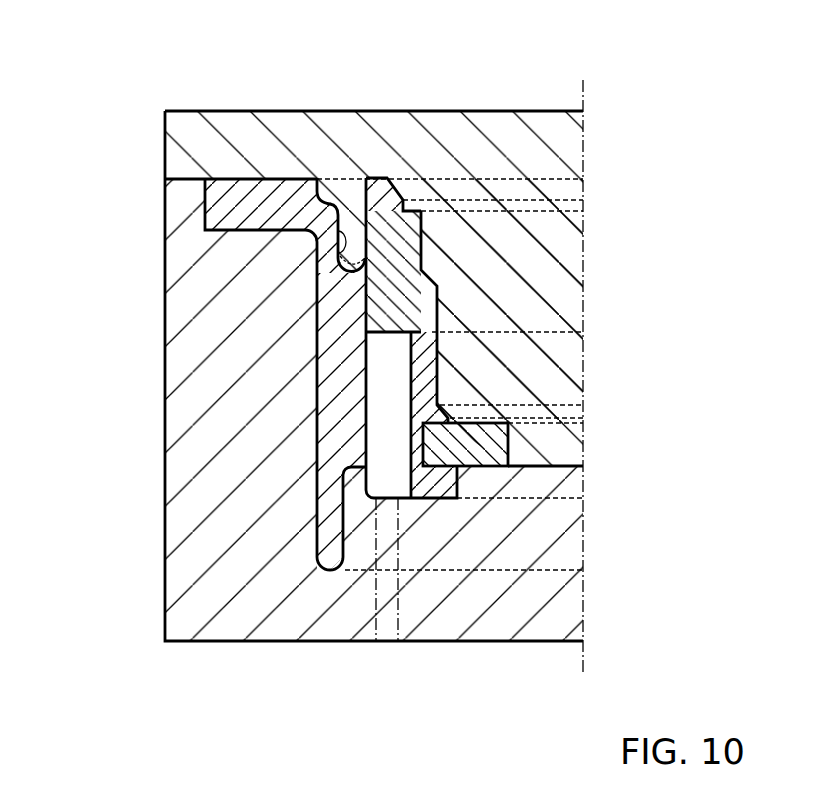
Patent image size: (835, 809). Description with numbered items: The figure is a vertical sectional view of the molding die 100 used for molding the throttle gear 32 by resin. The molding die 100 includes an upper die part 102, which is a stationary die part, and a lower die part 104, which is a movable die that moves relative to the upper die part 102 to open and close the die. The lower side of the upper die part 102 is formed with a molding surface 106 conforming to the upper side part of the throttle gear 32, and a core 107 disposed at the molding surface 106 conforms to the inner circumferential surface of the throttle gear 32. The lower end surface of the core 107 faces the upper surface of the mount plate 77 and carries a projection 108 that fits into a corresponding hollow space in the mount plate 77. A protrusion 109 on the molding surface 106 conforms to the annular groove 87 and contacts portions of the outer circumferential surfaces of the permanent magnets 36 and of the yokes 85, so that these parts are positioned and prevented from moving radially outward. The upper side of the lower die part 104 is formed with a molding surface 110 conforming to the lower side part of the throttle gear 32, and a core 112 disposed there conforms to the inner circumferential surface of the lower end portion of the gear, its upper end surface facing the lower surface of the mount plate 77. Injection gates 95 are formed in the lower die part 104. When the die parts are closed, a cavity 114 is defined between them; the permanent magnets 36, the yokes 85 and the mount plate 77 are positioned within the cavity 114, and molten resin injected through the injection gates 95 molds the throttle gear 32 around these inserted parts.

The molding die 100 is at (425, 78).
The upper die part 102 is at (529, 108).
The lower die part 104 is at (230, 643).
The molding surface 106 is at (278, 190).
The core 107 is at (537, 366).
The projection 108 is at (560, 440).
The protrusion 109 is at (352, 197).
The molding surface 110 is at (317, 558).
The core 112 is at (540, 485).
The cavity 114 is at (234, 374).
The throttle gear 32 is at (338, 384).
The permanent magnets 36 is at (407, 227).
The mount plate 77 is at (473, 454).
The yokes 85 is at (542, 268).
The annular groove 87 is at (338, 249).
The injection gates 95 is at (386, 625).